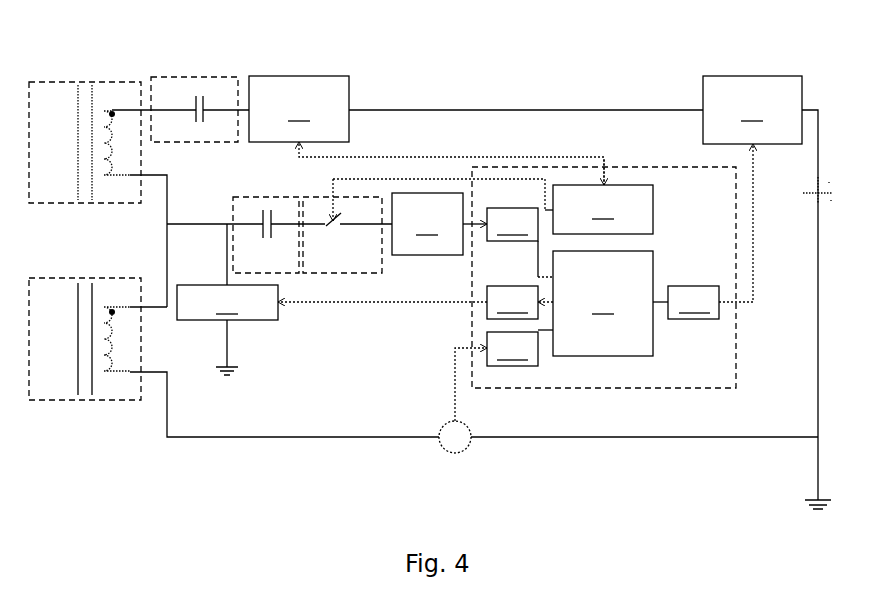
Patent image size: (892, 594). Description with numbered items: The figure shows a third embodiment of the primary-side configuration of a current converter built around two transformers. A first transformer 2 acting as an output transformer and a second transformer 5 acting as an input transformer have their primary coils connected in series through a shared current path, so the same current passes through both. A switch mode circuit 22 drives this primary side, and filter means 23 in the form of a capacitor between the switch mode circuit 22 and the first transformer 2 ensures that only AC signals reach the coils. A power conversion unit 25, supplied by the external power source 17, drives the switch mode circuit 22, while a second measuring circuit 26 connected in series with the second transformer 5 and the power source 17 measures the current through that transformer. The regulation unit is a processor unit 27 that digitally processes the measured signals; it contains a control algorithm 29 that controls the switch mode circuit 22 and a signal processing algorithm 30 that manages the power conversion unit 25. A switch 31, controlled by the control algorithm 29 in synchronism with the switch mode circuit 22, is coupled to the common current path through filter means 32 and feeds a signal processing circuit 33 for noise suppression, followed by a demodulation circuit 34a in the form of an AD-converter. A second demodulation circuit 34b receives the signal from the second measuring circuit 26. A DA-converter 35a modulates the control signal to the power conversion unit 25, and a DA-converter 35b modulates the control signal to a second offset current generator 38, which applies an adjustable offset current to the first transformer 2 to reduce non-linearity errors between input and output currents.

The first transformer 2 is at (71, 78).
The second transformer 5 is at (106, 398).
The external power source 17 is at (803, 192).
The switch mode circuit 22 is at (299, 109).
The filter means 23 is at (190, 75).
The power conversion unit 25 is at (752, 110).
The second measuring circuit 26 is at (465, 448).
The processor unit 27 is at (653, 168).
The control algorithm 29 is at (476, 188).
The signal processing algorithm 30 is at (610, 303).
The switch 31 is at (349, 272).
The filter means 32 is at (282, 272).
The signal processing circuit 33 is at (439, 224).
The demodulation circuit 34a is at (520, 242).
The second demodulation circuit 34b is at (504, 375).
The DA-converter 35a is at (710, 231).
The DA-converter 35b is at (520, 302).
The second offset current generator 38 is at (332, 302).